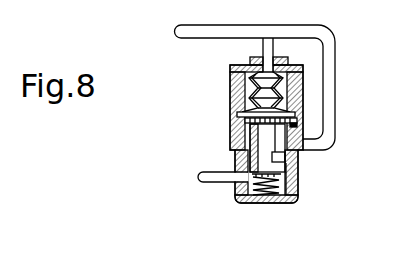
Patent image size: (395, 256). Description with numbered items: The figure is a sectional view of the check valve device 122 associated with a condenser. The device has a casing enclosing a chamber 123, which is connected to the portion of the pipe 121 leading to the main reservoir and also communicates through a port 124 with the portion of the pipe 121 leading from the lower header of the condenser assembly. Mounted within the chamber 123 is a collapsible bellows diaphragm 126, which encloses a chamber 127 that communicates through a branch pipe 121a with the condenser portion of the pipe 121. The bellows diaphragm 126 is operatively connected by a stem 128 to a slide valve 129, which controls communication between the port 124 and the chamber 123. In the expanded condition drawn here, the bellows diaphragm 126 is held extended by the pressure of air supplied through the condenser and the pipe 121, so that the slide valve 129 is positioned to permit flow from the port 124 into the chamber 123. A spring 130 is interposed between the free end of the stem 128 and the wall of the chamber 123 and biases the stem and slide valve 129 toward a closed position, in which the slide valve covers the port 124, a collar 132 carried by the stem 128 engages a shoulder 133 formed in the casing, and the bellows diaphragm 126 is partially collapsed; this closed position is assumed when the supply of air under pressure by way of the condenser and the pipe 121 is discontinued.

The pipe 121 is at (181, 32).
The branch pipe 121a is at (275, 48).
The check valve device 122 is at (298, 194).
The chamber 123 is at (243, 128).
The port 124 is at (286, 157).
The collapsible bellows diaphragm 126 is at (250, 71).
The chamber 127 is at (242, 92).
The stem 128 is at (252, 148).
The slide valve 129 is at (293, 179).
The spring 130 is at (269, 196).
The collar 132 is at (297, 124).
The shoulder 133 is at (298, 108).